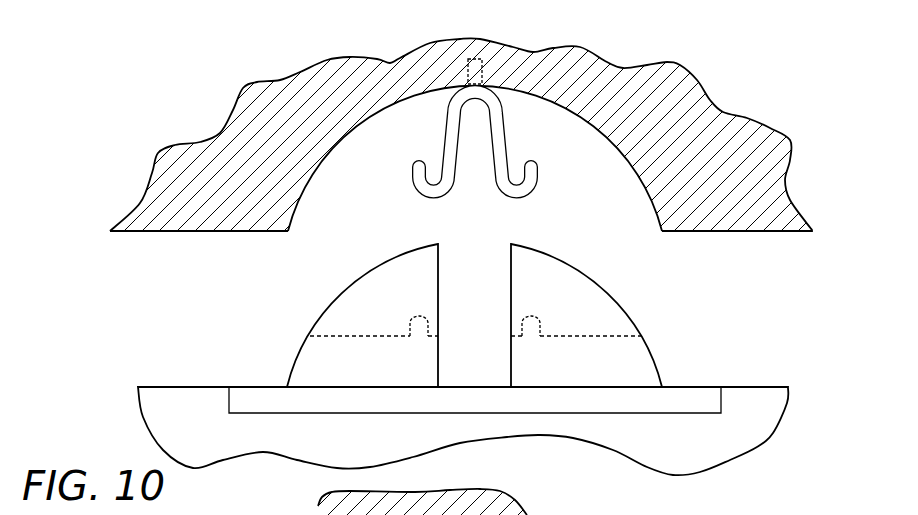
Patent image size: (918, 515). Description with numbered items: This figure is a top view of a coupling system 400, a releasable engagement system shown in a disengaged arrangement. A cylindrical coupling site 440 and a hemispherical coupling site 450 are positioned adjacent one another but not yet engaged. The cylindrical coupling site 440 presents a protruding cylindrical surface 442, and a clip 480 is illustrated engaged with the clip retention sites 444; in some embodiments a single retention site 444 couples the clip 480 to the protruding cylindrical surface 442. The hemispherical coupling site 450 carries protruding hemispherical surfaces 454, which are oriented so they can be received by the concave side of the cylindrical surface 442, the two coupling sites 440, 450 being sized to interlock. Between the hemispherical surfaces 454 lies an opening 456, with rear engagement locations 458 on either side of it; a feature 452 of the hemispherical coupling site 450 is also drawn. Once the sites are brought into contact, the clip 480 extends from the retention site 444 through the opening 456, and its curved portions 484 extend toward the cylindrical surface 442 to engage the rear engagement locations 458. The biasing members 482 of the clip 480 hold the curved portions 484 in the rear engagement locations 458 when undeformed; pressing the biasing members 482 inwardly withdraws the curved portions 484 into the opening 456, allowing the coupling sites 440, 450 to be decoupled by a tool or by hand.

The coupling system 400 is at (423, 376).
The cylindrical coupling site 440 is at (556, 42).
The protruding cylindrical surface 442 is at (593, 128).
The clip retention site 444 is at (477, 57).
The hemispherical coupling site 450 is at (650, 437).
The recess in base 452 is at (678, 402).
The protruding hemispherical surface 454 is at (481, 314).
The opening 456 is at (477, 357).
The rear engagement location 458 is at (417, 313).
The clip 480 is at (431, 165).
The biasing member 482 is at (458, 162).
The curved portion 484 is at (440, 198).